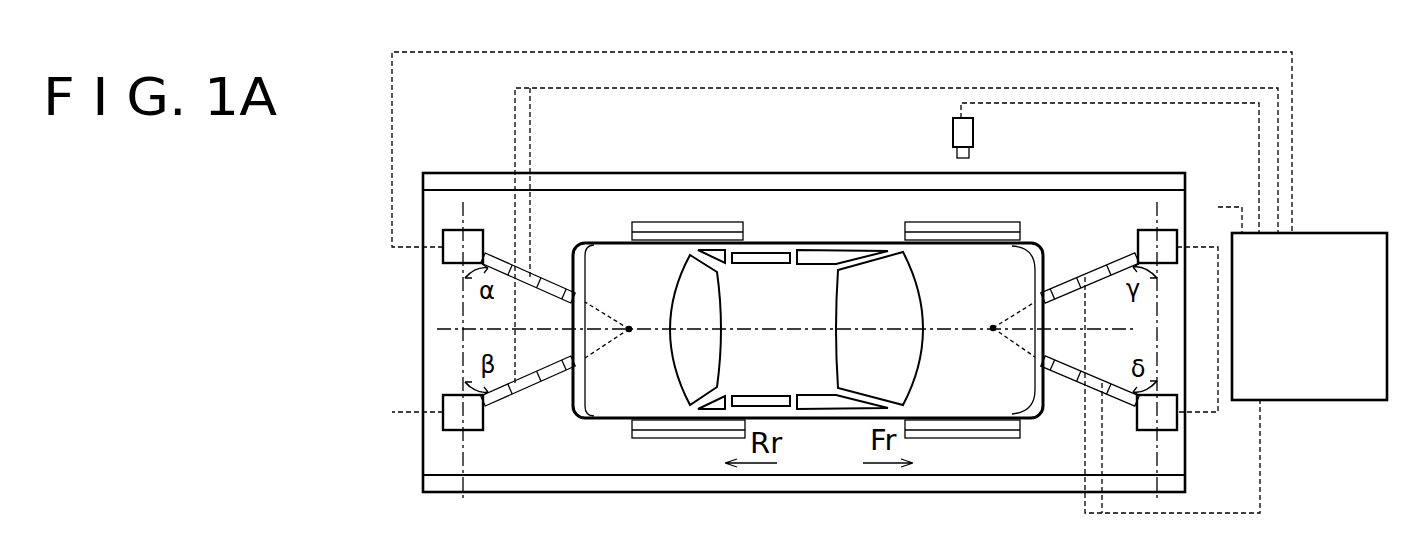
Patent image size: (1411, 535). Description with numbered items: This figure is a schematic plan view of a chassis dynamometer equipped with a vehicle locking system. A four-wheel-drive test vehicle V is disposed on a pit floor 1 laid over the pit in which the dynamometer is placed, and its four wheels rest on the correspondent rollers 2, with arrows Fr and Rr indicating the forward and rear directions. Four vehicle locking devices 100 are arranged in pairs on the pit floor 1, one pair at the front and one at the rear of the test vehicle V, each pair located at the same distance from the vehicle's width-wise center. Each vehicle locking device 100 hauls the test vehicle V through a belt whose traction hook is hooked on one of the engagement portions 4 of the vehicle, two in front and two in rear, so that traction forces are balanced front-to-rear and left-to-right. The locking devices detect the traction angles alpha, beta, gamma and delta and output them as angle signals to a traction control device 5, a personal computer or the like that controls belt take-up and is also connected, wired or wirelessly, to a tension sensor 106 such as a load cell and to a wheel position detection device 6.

The pit floor 1 is at (1075, 200).
The roller 2 is at (632, 228).
The engagement portion 4 is at (580, 297).
The traction control device 5 is at (1336, 233).
The wheel position detection device 6 is at (953, 130).
The vehicle locking device 100 is at (443, 240).
The tension sensor 106 is at (527, 275).
The test vehicle V is at (760, 290).